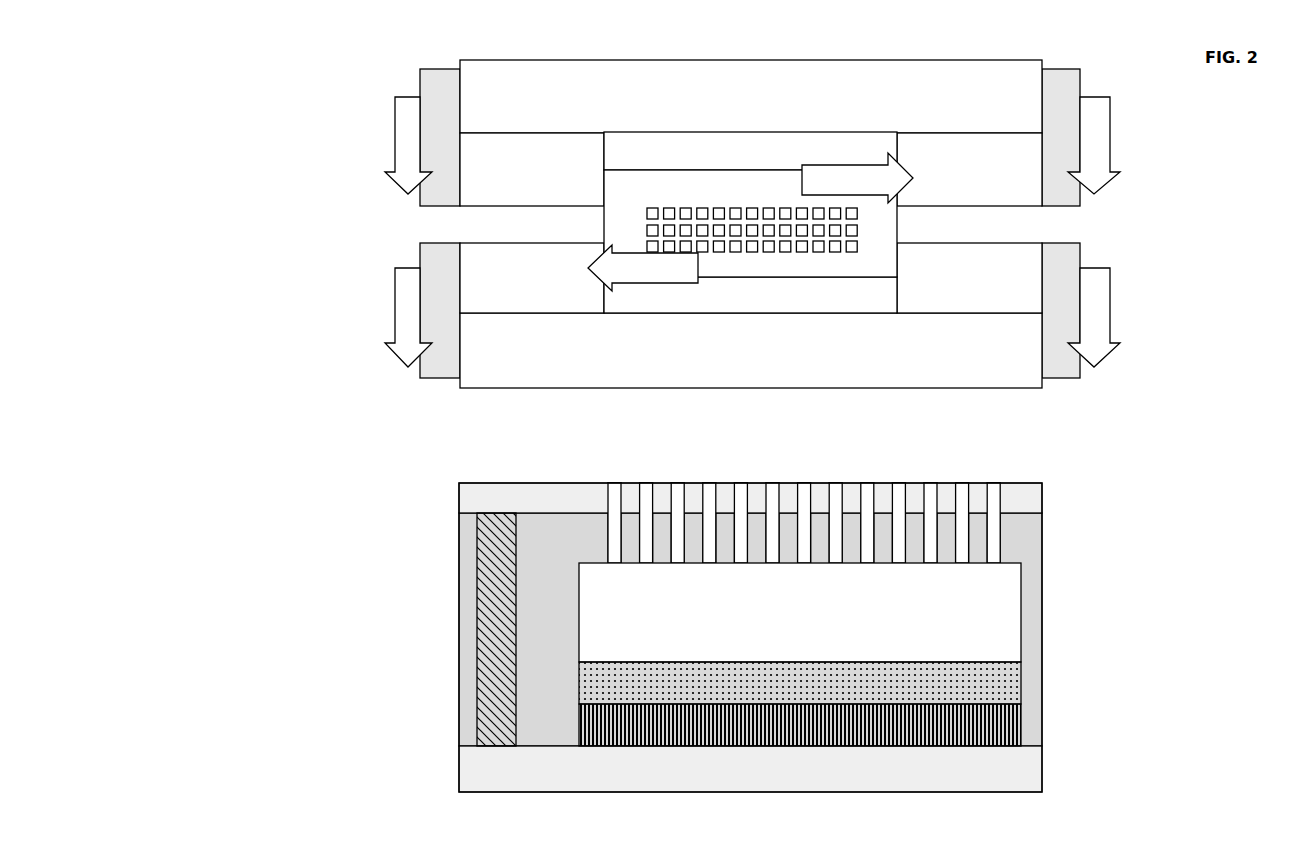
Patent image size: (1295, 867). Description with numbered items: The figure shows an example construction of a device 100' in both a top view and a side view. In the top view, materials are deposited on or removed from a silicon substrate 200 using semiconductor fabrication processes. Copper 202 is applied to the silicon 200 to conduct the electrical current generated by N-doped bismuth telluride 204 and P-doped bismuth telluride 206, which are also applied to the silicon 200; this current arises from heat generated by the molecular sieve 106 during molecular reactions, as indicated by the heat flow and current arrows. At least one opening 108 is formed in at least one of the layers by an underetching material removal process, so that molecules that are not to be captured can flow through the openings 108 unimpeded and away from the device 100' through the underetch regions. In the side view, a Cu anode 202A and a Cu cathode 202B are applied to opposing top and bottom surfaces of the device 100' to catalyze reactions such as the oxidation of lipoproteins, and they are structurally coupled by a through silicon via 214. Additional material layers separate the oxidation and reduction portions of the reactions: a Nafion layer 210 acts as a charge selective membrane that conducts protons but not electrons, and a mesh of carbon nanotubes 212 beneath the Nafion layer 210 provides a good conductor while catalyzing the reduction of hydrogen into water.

The device 100' is at (701, 424).
The silicon substrate 200 is at (751, 224).
The copper 202 is at (752, 223).
The Cu anode 202A is at (750, 498).
The Cu cathode 202B is at (750, 769).
The N-doped bismuth telluride 204 is at (751, 169).
The P-doped bismuth telluride 206 is at (751, 278).
The molecular sieve 106 is at (750, 223).
The opening 108 is at (647, 213).
The Nafion layer 210 is at (800, 683).
The mesh of carbon nanotubes 212 is at (800, 725).
The through silicon via 214 is at (475, 634).